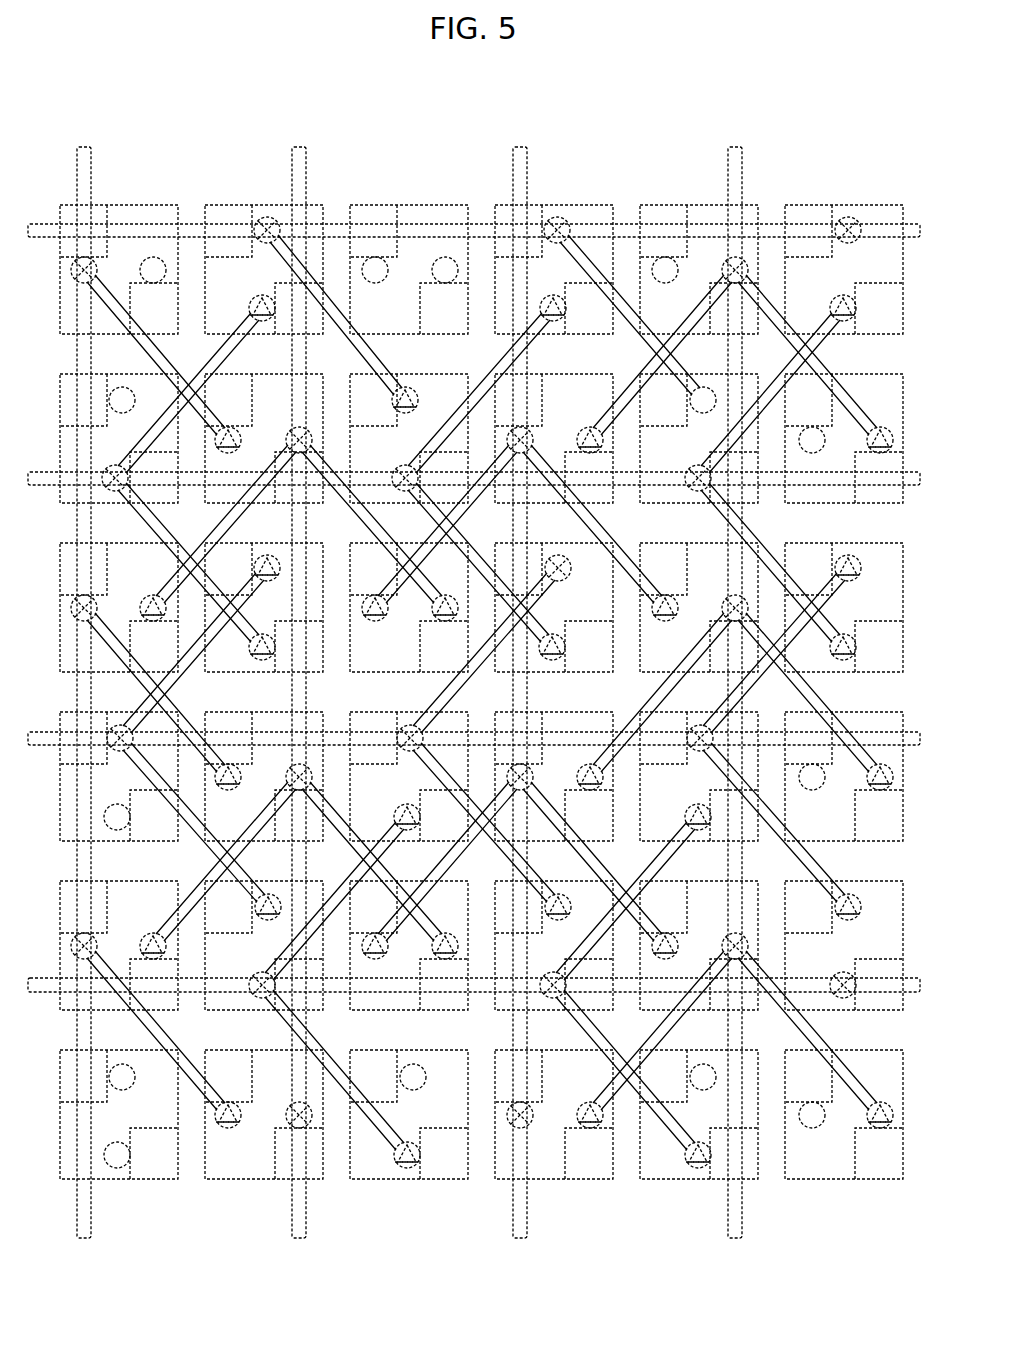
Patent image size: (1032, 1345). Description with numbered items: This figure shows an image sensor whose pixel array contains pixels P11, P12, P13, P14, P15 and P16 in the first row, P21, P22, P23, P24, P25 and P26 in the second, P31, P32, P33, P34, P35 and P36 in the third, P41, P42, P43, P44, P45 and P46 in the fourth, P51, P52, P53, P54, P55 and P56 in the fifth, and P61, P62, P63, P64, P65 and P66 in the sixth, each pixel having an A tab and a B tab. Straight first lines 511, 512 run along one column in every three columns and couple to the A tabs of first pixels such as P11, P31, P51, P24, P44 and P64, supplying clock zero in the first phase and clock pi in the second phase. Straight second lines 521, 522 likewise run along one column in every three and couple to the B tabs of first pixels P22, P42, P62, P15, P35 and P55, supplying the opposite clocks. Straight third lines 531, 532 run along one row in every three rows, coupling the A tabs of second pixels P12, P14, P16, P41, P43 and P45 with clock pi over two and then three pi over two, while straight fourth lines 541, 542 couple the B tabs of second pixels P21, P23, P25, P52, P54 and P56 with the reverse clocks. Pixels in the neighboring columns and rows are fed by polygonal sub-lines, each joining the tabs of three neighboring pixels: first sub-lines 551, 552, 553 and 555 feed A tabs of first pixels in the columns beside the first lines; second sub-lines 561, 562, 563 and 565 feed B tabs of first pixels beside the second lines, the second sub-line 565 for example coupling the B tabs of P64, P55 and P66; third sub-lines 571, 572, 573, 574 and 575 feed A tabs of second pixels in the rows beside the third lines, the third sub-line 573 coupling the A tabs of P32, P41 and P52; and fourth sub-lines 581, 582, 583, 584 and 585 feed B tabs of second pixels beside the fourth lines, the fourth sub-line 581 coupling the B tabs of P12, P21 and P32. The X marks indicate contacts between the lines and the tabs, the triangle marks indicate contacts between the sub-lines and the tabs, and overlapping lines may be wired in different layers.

The first line 511 is at (89, 145).
The second line 521 is at (303, 145).
The first line 512 is at (523, 145).
The second line 522 is at (738, 145).
The third line 531 is at (44, 223).
The fourth line 541 is at (44, 471).
The third line 532 is at (44, 731).
The fourth line 542 is at (44, 977).
The first sub-line 551 is at (112, 278).
The first sub-line 552 is at (111, 625).
The first sub-line 553 is at (117, 957).
The first sub-line 555 is at (551, 800).
The second sub-line 561 is at (333, 460).
The second sub-line 562 is at (334, 797).
The second sub-line 563 is at (768, 290).
The second sub-line 565 is at (798, 1029).
The third sub-line 571 is at (334, 288).
The third sub-line 572 is at (623, 290).
The third sub-line 573 is at (197, 637).
The third sub-line 574 is at (457, 697).
The third sub-line 575 is at (768, 673).
The fourth sub-line 581 is at (158, 420).
The fourth sub-line 582 is at (455, 415).
The fourth sub-line 583 is at (769, 380).
The fourth sub-line 584 is at (800, 673).
The fourth sub-line 585 is at (640, 882).
The first pixel P11 is at (118, 203).
The second pixel P12 is at (263, 203).
The pixel P13 is at (408, 203).
The second pixel P14 is at (553, 203).
The first pixel P15 is at (698, 203).
The second pixel P16 is at (843, 203).
The second pixel P21 is at (118, 372).
The first pixel P22 is at (263, 372).
The second pixel P23 is at (408, 372).
The first pixel P24 is at (553, 372).
The second pixel P25 is at (698, 372).
The first pixel P26 is at (843, 372).
The first pixel P31 is at (118, 541).
The second pixel P32 is at (263, 541).
The first pixel P33 is at (408, 541).
The second pixel P34 is at (553, 541).
The first pixel P35 is at (698, 541).
The second pixel P36 is at (843, 541).
The second pixel P41 is at (118, 710).
The first pixel P42 is at (263, 710).
The second pixel P43 is at (408, 710).
The first pixel P44 is at (553, 710).
The second pixel P45 is at (698, 710).
The first pixel P46 is at (843, 710).
The first pixel P51 is at (118, 879).
The second pixel P52 is at (263, 879).
The first pixel P53 is at (408, 879).
The second pixel P54 is at (553, 879).
The first pixel P55 is at (698, 879).
The second pixel P56 is at (843, 879).
The pixel P61 is at (118, 1048).
The first pixel P62 is at (263, 1048).
The second pixel P63 is at (408, 1048).
The first pixel P64 is at (553, 1048).
The second pixel P65 is at (698, 1048).
The first pixel P66 is at (843, 1048).